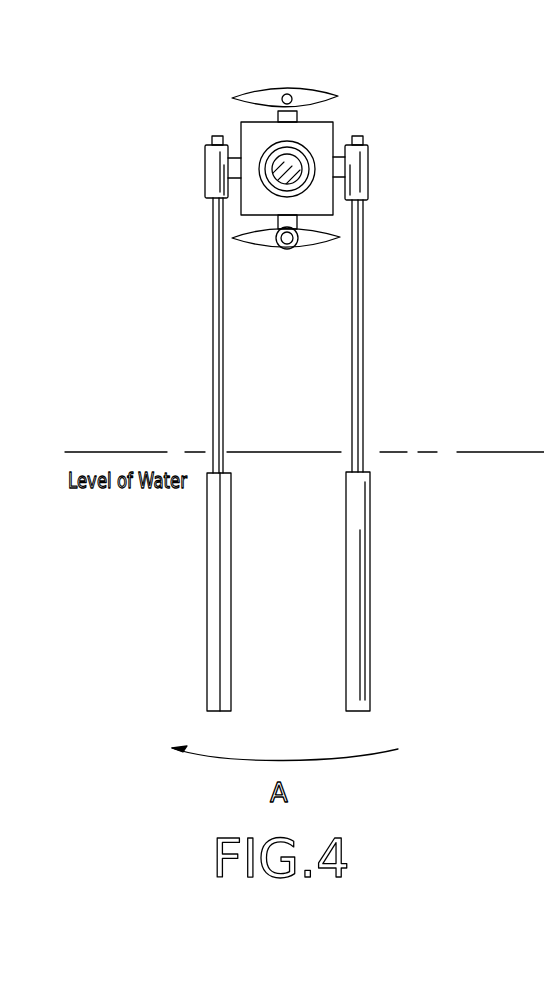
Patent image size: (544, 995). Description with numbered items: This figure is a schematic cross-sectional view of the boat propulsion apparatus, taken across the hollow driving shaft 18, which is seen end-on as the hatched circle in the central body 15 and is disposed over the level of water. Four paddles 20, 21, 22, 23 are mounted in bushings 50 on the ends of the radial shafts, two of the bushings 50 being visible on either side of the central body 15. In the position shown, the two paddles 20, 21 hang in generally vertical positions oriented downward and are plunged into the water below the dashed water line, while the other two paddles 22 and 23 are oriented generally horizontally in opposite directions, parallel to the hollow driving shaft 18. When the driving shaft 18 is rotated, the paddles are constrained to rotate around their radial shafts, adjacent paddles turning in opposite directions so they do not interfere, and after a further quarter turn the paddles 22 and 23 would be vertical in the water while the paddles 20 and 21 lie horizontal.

The body housing 15 is at (305, 150).
The hollow driving shaft 18 is at (262, 153).
The paddle 20 is at (213, 595).
The paddle 21 is at (365, 580).
The paddle 22 is at (308, 243).
The paddle 23 is at (302, 92).
The bushing 50 is at (215, 178).